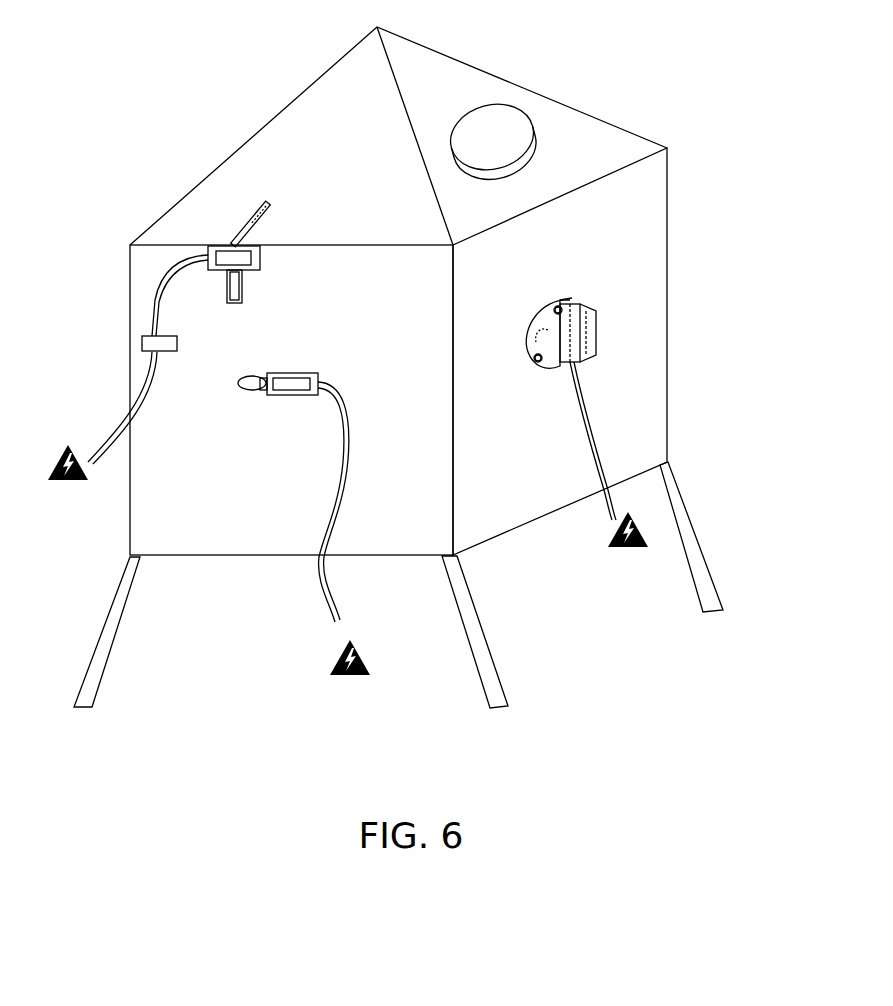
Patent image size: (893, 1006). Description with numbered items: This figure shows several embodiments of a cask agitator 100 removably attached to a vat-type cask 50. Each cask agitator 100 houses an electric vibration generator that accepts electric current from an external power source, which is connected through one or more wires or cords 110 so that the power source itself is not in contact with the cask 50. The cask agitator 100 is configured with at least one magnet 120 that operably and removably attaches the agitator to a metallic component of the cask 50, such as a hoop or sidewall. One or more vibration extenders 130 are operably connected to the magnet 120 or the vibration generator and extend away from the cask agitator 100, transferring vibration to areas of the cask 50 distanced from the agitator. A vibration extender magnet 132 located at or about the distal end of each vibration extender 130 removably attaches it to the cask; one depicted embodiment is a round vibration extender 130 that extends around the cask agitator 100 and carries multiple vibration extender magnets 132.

The cask 50 is at (540, 90).
The cask agitator 100 is at (262, 280).
The wires or cords 110 is at (330, 485).
The magnet 120 is at (265, 205).
The vibration extender 130 is at (255, 226).
The vibration extender magnet 132 is at (240, 380).